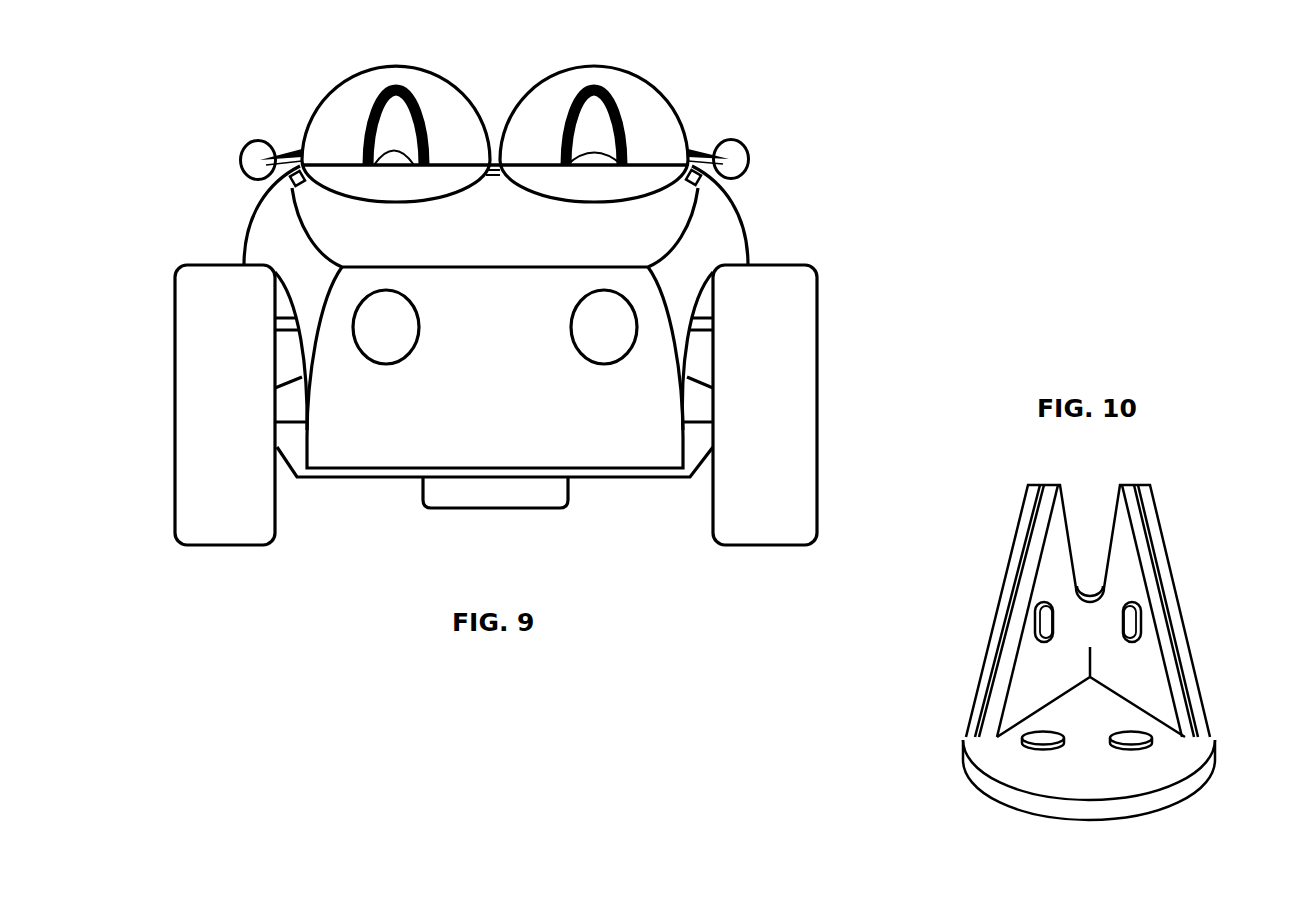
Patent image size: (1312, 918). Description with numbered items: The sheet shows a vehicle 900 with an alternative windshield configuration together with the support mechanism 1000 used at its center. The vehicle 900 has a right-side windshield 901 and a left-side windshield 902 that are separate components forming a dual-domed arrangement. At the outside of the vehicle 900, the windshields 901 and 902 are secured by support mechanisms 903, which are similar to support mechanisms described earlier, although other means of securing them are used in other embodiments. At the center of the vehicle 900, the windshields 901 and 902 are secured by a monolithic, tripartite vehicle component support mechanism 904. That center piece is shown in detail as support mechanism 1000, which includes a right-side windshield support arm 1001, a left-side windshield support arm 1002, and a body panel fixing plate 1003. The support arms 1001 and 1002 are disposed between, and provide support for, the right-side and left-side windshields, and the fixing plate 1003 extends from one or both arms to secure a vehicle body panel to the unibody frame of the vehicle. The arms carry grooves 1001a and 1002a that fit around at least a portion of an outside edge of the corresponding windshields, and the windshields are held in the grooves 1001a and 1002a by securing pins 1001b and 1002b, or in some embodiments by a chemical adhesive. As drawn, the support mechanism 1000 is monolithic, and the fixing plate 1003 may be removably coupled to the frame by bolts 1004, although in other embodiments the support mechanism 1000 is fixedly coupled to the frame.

In FIG. 9, the vehicle 900 is at (868, 172).
In FIG. 9, the right-side windshield 901 is at (680, 108).
In FIG. 9, the left-side windshield 902 is at (462, 84).
In FIG. 9, the support mechanism 903 is at (304, 183).
In FIG. 9, the monolithic, tripartite vehicle component support mechanism 904 is at (494, 177).
In FIG. 10, the support mechanism 1000 is at (890, 692).
In FIG. 10, the right-side windshield support arm 1001 is at (1210, 611).
In FIG. 10, the groove 1001a is at (1184, 659).
In FIG. 10, the securing pin 1001b is at (1142, 618).
In FIG. 10, the left-side windshield support arm 1002 is at (967, 611).
In FIG. 10, the groove 1002a is at (992, 627).
In FIG. 10, the securing pin 1002b is at (1045, 602).
In FIG. 10, the body panel fixing plate 1003 is at (1117, 786).
In FIG. 10, the bolts 1004 is at (1123, 733).